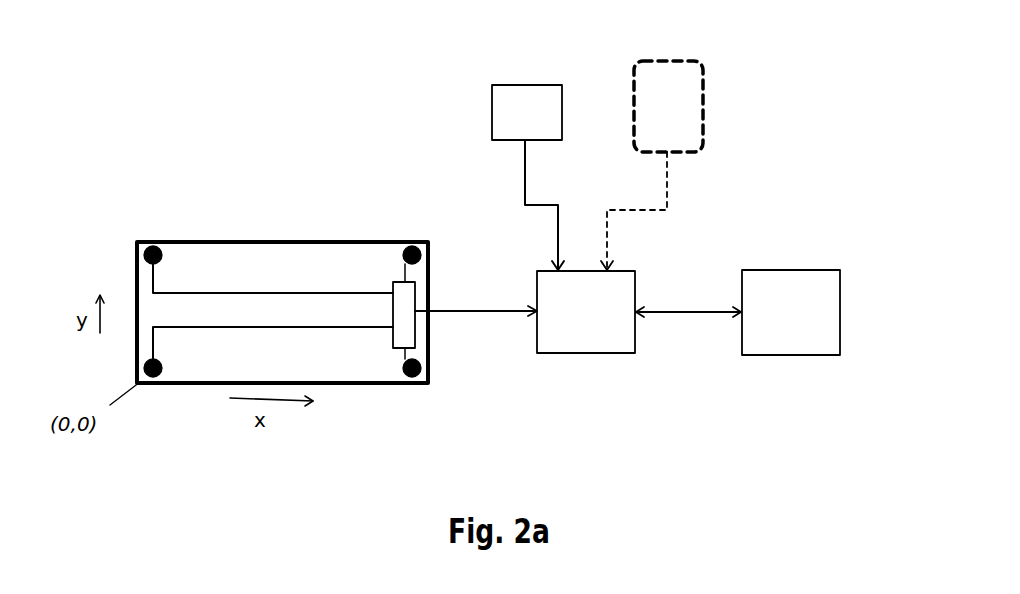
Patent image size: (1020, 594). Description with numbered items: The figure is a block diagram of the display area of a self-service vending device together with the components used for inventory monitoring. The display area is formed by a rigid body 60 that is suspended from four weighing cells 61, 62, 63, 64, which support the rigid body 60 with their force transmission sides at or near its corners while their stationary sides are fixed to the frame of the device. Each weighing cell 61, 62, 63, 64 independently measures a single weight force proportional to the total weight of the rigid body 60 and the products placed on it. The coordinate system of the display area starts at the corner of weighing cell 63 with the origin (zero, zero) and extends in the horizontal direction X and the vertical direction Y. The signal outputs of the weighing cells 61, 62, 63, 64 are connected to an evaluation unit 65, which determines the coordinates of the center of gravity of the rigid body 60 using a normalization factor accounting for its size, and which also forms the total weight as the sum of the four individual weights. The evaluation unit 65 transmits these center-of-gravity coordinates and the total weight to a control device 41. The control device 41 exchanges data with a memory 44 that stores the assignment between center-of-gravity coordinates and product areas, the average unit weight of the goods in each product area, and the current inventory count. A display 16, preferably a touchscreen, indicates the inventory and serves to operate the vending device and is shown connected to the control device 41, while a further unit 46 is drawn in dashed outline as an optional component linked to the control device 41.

The display 16 is at (517, 78).
The control device 41 is at (582, 353).
The memory 44 is at (842, 323).
The optional input unit 46 is at (702, 113).
The rigid body 60 is at (262, 240).
The weighing cell 61 is at (410, 240).
The weighing cell 62 is at (408, 387).
The weighing cell 63 is at (150, 380).
The weighing cell 64 is at (162, 240).
The evaluation unit 65 is at (393, 282).